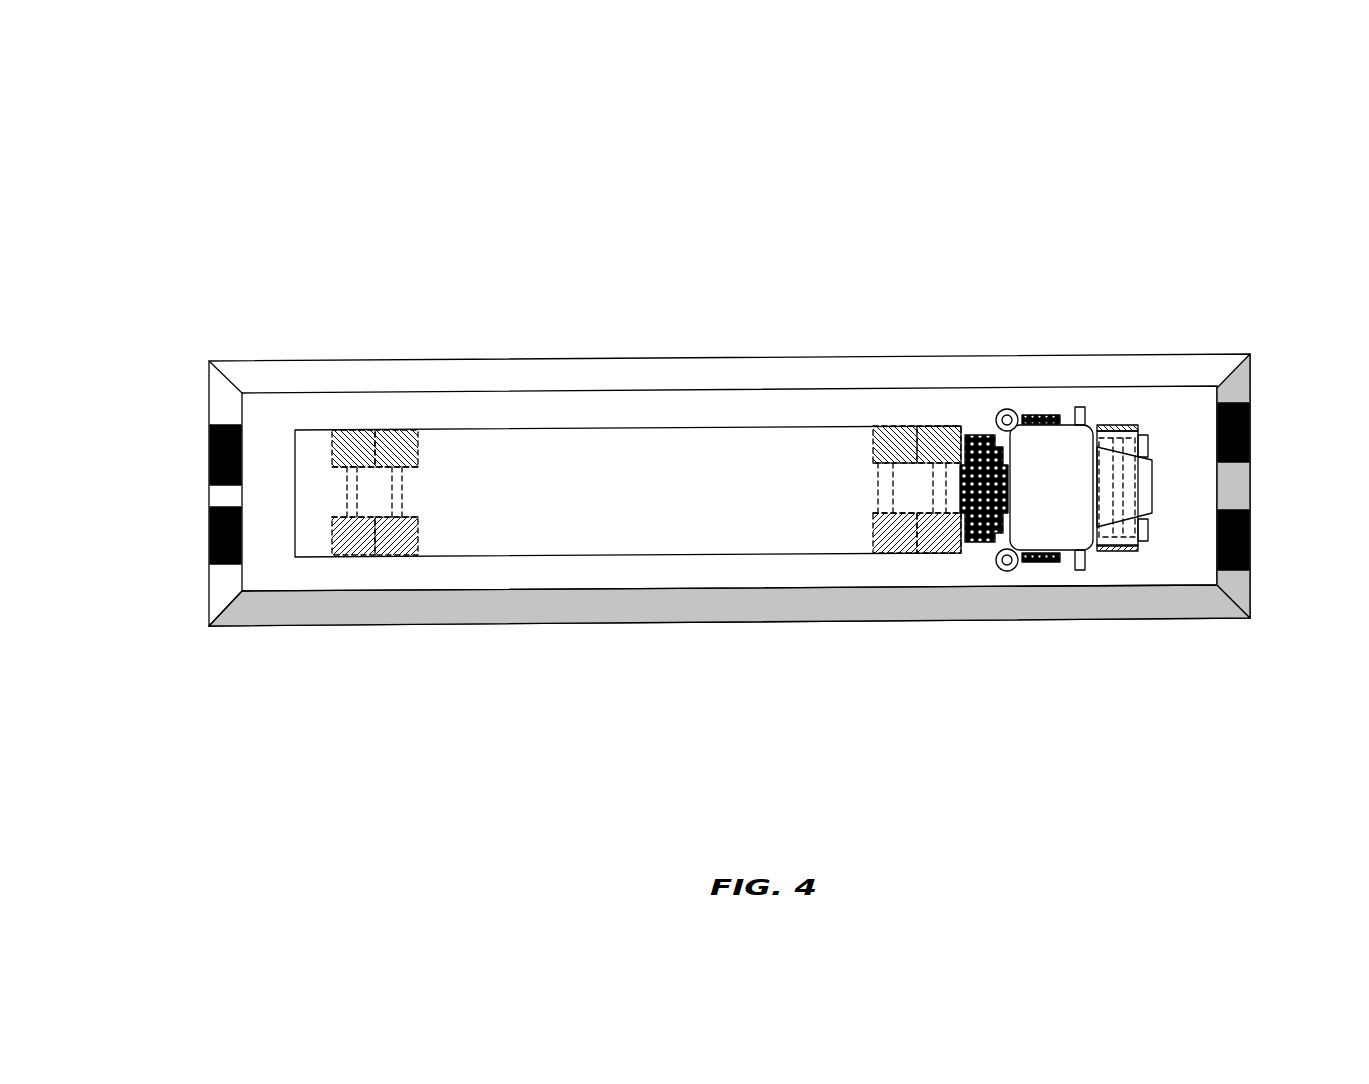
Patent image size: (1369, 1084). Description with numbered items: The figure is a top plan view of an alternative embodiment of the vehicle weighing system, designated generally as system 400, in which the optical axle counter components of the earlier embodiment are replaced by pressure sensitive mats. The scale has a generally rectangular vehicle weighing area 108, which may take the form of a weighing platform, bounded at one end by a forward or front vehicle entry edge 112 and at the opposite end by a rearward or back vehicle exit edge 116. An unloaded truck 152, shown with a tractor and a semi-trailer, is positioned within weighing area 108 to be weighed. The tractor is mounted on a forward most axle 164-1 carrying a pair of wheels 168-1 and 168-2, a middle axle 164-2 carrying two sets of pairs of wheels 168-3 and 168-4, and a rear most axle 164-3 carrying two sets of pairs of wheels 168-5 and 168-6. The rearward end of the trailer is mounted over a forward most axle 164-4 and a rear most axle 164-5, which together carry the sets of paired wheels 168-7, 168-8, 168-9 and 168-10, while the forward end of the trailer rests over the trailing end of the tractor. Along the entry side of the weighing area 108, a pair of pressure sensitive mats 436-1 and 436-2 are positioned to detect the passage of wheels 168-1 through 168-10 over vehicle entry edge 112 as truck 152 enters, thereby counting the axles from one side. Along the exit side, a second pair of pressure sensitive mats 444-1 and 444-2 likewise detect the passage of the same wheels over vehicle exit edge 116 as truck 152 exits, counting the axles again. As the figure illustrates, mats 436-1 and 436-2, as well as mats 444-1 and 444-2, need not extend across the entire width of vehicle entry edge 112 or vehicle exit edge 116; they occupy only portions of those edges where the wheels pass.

The system 400 is at (372, 245).
The vehicle weighing area 108 is at (787, 412).
The vehicle entry edge 112 is at (240, 418).
The vehicle exit edge 116 is at (1217, 400).
The truck 152 is at (692, 575).
The forward most axle 164-1 is at (1117, 556).
The middle axle 164-2 is at (935, 420).
The rear most axle 164-3 is at (895, 557).
The forward most axle 164-4 is at (430, 412).
The rear most axle 164-5 is at (353, 565).
The wheel 168-1 is at (1125, 428).
The wheel 168-2 is at (1110, 550).
The wheels 168-3 is at (950, 440).
The wheels 168-4 is at (933, 537).
The wheels 168-5 is at (898, 440).
The wheels 168-6 is at (883, 537).
The wheels 168-7 is at (403, 450).
The wheels 168-8 is at (400, 540).
The wheels 168-9 is at (347, 447).
The wheels 168-10 is at (347, 540).
The pressure sensitive mat 436-1 is at (233, 422).
The pressure sensitive mat 436-2 is at (210, 566).
The pressure sensitive mat 444-1 is at (1250, 430).
The pressure sensitive mat 444-2 is at (1237, 570).